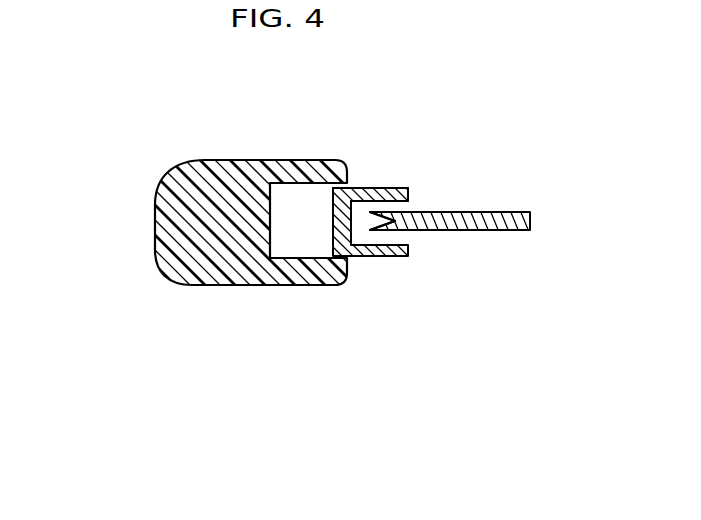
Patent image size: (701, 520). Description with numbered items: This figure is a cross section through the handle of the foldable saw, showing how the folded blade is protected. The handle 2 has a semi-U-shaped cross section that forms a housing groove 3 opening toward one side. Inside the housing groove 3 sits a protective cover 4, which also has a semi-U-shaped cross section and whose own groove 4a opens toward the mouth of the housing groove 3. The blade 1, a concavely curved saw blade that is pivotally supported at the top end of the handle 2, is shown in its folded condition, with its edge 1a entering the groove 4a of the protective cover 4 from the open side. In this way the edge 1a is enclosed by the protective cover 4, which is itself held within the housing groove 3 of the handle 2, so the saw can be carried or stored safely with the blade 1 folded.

The blade 1 is at (486, 232).
The edge 1a is at (392, 210).
The handle 2 is at (160, 200).
The housing groove 3 is at (300, 207).
The protective cover 4 is at (372, 258).
The groove 4a is at (362, 212).